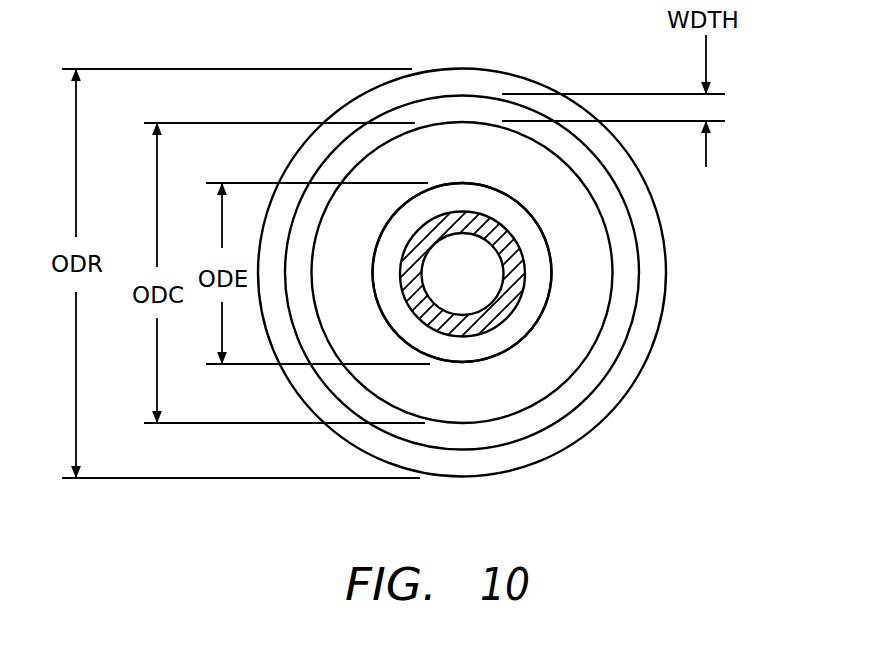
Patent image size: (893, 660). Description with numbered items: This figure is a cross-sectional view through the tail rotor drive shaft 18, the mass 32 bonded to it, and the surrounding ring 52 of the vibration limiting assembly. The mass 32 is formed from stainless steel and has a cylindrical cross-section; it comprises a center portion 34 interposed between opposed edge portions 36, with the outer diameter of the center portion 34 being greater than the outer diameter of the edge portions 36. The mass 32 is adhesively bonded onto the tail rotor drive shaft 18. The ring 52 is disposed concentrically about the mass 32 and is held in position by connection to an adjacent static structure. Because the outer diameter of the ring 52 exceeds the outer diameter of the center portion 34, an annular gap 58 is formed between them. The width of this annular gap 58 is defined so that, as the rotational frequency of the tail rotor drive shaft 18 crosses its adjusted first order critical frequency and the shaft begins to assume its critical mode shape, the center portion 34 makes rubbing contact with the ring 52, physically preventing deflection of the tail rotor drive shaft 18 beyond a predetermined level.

The tail rotor drive shaft 18 is at (475, 336).
The mass 32 is at (583, 301).
The center portion 34 is at (592, 305).
The edge portions 36 is at (522, 335).
The ring 52 is at (655, 207).
The annular gap 58 is at (626, 270).